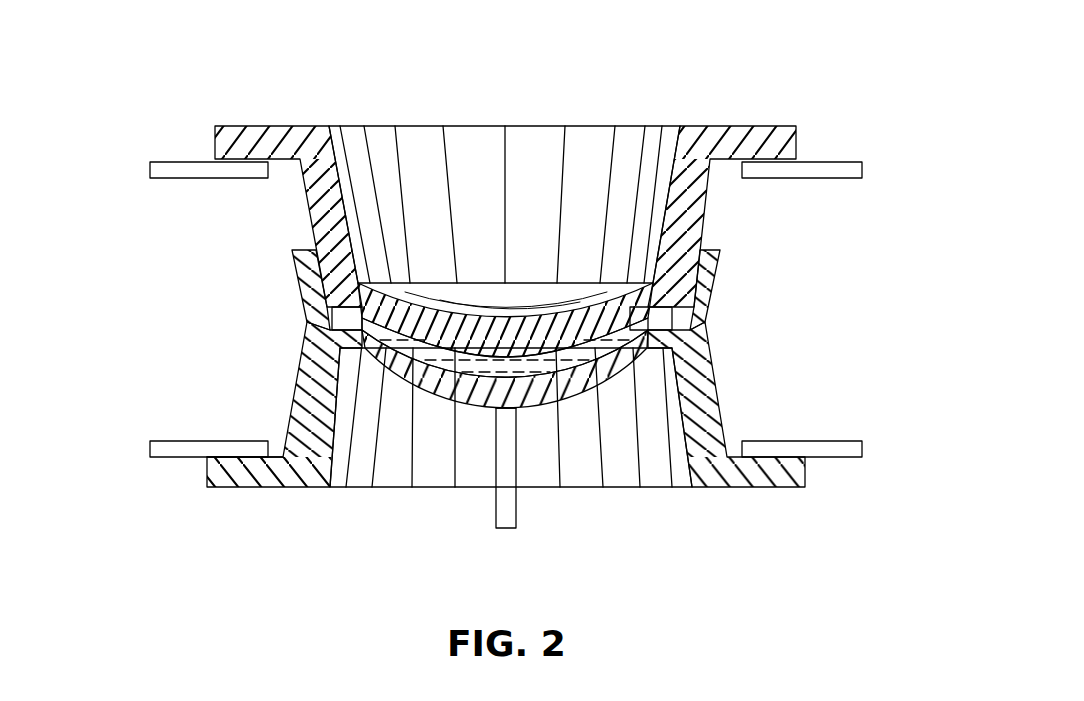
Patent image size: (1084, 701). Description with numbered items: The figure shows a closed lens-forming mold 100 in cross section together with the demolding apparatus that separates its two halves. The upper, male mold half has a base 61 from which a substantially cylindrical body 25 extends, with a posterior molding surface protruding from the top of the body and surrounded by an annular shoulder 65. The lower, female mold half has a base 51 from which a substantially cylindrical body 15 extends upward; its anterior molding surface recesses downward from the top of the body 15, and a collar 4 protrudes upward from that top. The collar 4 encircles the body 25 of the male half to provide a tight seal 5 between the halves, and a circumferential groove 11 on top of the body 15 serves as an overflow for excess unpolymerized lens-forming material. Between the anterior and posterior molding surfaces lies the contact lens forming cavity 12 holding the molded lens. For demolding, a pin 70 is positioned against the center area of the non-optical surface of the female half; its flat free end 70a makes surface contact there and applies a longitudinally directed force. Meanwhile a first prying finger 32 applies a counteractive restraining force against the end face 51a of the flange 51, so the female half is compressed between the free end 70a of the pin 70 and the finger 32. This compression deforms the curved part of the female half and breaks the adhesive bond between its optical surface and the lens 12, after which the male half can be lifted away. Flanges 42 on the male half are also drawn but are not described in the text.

The mold 100 is at (500, 298).
The base 61 is at (528, 195).
The upper flange 42 is at (160, 170).
The substantially cylindrical body 25 is at (690, 205).
The collar 4 is at (713, 262).
The tight seal 5 is at (326, 318).
The circumferential groove 11 is at (650, 317).
The annular shoulder 65 is at (323, 343).
The end face 51a is at (262, 443).
The substantially cylindrical body 15 is at (722, 408).
The first prying finger 32 is at (162, 449).
The contact lens forming cavity 12 is at (497, 398).
The flat free end 70a is at (497, 400).
The pin 70 is at (490, 492).
The base 51 is at (498, 409).